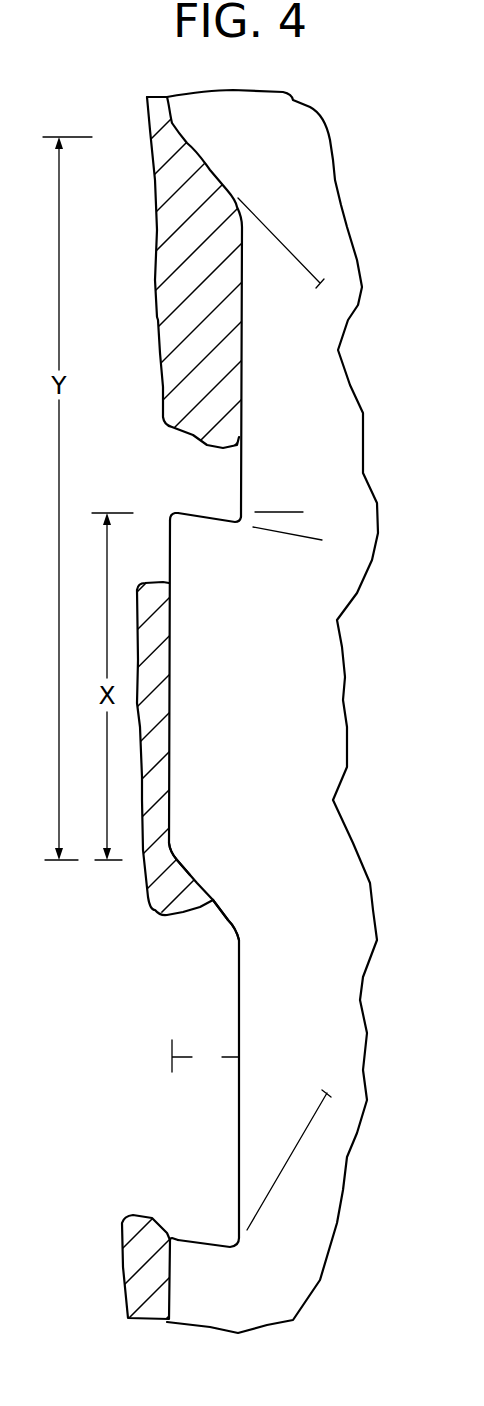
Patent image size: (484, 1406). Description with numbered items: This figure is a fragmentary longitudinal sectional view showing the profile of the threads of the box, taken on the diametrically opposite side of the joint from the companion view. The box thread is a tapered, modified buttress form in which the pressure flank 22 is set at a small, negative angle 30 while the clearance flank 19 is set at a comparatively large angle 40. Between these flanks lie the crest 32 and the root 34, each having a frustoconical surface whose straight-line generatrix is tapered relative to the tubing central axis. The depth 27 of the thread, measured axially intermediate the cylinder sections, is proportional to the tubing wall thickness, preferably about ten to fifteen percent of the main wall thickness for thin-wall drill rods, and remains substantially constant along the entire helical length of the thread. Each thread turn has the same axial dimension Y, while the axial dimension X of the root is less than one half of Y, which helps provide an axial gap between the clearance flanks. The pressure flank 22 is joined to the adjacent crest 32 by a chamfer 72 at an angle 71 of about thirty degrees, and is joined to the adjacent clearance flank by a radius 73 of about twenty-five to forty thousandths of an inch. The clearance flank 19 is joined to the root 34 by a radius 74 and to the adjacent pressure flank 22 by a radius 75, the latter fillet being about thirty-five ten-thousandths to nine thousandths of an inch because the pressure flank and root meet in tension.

The clearance flank 19 is at (203, 162).
The pressure flank 22 is at (200, 513).
The depth 27 is at (205, 1056).
The angle 30 is at (292, 480).
The crest 32 is at (240, 1007).
The root 34 is at (169, 662).
The angle 40 is at (304, 295).
The angle 71 is at (252, 1070).
The chamfer 72 is at (230, 1242).
The radius 73 is at (230, 930).
The radius 74 is at (192, 852).
The radius 75 is at (185, 526).